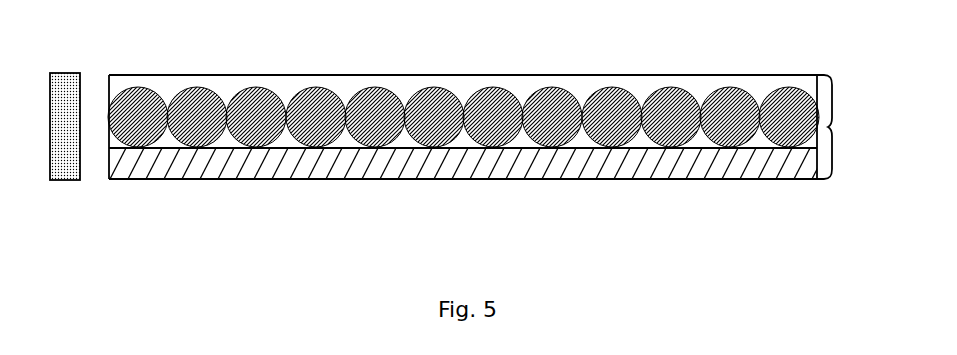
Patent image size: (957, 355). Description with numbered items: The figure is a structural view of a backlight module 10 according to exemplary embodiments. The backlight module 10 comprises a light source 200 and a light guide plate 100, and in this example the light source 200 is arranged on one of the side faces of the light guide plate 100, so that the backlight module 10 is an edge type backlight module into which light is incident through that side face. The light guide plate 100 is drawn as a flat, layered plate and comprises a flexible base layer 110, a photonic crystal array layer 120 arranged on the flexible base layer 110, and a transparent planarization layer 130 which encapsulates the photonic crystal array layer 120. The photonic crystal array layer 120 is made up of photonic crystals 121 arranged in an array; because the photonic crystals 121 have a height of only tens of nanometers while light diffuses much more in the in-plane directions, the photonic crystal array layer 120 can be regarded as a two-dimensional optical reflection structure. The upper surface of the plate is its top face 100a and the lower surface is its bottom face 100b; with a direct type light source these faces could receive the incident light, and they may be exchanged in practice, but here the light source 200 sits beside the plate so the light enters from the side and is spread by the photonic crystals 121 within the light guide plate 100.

The backlight module 10 is at (494, 135).
The light guide plate 100 is at (494, 135).
The top face 100a is at (530, 75).
The bottom face 100b is at (568, 179).
The flexible base layer 110 is at (197, 175).
The photonic crystal array layer 120 is at (338, 90).
The photonic crystal 121 is at (376, 119).
The transparent planarization layer 130 is at (168, 89).
The light source 200 is at (65, 172).